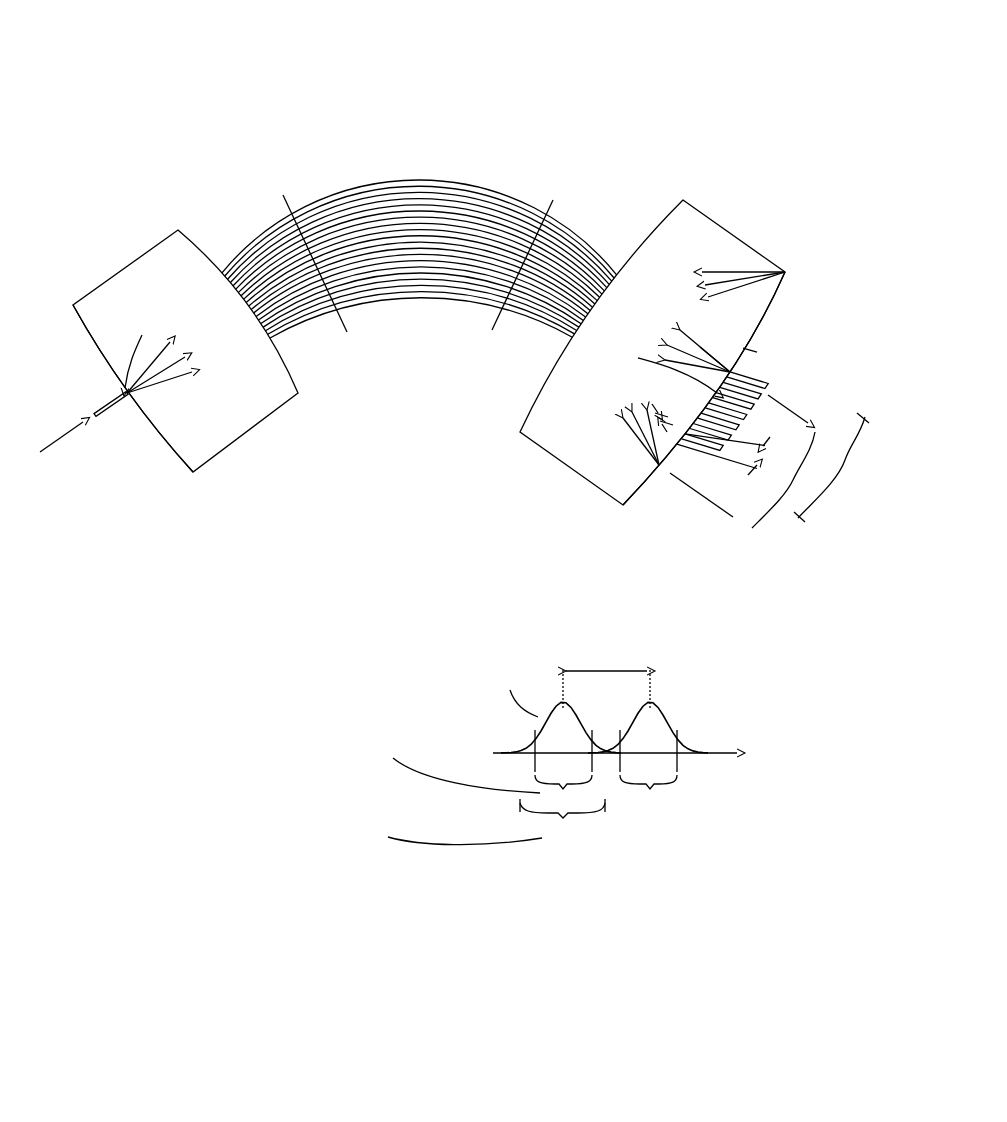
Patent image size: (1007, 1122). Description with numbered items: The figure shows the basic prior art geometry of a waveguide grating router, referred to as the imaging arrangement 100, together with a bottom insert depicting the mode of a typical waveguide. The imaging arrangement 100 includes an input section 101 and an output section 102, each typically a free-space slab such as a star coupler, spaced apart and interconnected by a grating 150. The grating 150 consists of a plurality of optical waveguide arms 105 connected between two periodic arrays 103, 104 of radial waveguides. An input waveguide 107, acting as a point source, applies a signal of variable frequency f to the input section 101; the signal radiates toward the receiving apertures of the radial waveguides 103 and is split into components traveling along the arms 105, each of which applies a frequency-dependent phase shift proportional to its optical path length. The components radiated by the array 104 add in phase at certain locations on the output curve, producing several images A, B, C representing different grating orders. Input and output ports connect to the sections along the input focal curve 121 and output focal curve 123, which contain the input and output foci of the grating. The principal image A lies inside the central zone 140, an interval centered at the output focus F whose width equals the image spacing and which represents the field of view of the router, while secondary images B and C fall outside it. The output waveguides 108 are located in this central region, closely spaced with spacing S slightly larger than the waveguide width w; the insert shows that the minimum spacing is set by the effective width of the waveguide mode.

The imaging arrangement 100 is at (773, 237).
The grating 150 is at (610, 212).
The input section 101 is at (232, 425).
The output section 102 is at (560, 437).
The periodic array of radial waveguides 103 is at (347, 332).
The periodic array of radial waveguides 104 is at (547, 369).
The optical waveguide arms 105 is at (478, 332).
The input waveguide 107 is at (110, 408).
The output waveguides 108 is at (773, 383).
The input focal curve 121 is at (162, 443).
The output focal curve 123 is at (763, 318).
The central zone 140 is at (817, 458).